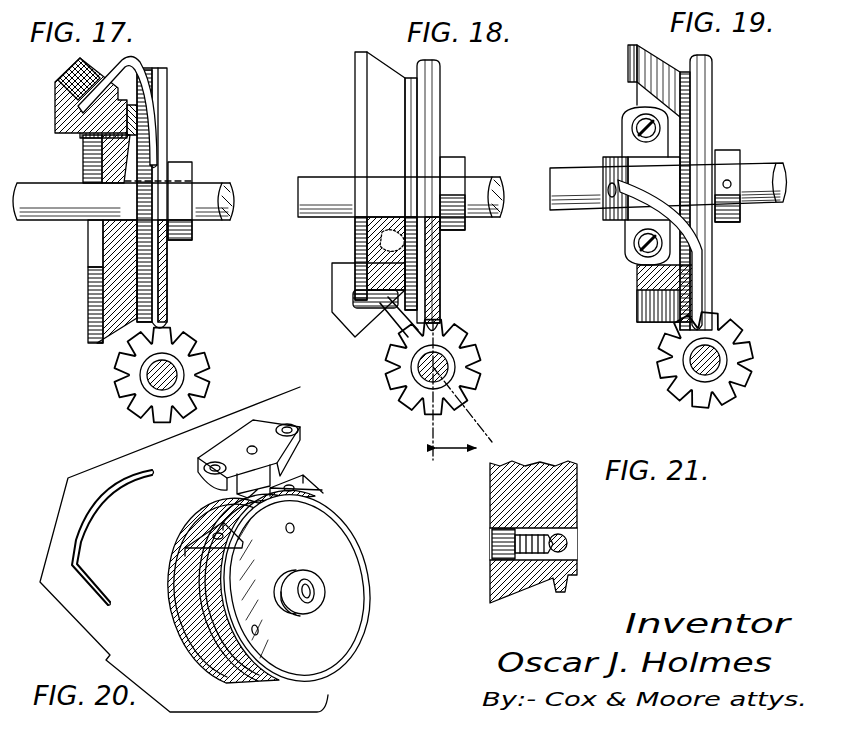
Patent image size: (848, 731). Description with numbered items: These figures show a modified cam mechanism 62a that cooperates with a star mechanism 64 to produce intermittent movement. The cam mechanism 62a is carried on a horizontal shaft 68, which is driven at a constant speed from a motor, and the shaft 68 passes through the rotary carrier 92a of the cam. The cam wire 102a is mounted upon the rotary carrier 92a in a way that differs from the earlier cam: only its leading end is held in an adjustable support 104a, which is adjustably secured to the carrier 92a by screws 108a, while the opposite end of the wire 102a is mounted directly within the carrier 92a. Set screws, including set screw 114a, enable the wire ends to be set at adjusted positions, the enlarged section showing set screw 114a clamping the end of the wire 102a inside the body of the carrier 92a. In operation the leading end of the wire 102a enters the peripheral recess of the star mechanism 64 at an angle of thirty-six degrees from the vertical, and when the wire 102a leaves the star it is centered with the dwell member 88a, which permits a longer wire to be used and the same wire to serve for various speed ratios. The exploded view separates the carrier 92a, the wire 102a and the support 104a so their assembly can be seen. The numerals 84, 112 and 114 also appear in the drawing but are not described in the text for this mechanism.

In FIG. 17, the modified cam mechanism 62a is at (172, 95).
In FIG. 18, the modified cam mechanism 62a is at (446, 80).
In FIG. 19, the modified cam mechanism 62a is at (712, 72).
In FIG. 20, the modified cam mechanism 62a is at (372, 590).
In FIG. 17, the star mechanism 64 is at (118, 405).
In FIG. 18, the star mechanism 64 is at (482, 380).
In FIG. 17, the shaft 68 is at (210, 180).
In FIG. 18, the shaft 68 is at (316, 183).
In FIG. 18, the hub of ratchet wheel 84 is at (452, 360).
In FIG. 18, the dwell member 88a is at (440, 125).
In FIG. 19, the dwell member 88a is at (700, 112).
In FIG. 17, the rotary carrier 92a is at (92, 338).
In FIG. 18, the rotary carrier 92a is at (373, 97).
In FIG. 19, the rotary carrier 92a is at (630, 48).
In FIG. 21, the rotary carrier 92a is at (515, 500).
In FIG. 17, the cam wire 102a is at (140, 58).
In FIG. 18, the cam wire 102a is at (395, 336).
In FIG. 19, the cam wire 102a is at (710, 292).
In FIG. 20, the cam wire 102a is at (78, 545).
In FIG. 21, the cam wire 102a is at (582, 543).
In FIG. 17, the adjustable support 104a is at (60, 133).
In FIG. 18, the adjustable support 104a is at (340, 310).
In FIG. 19, the adjustable support 104a is at (628, 250).
In FIG. 20, the adjustable support 104a is at (303, 432).
In FIG. 19, the screws 108a is at (634, 122).
In FIG. 17, the set screw 112 is at (62, 80).
In FIG. 19, the set screw 112 is at (610, 188).
In FIG. 18, the pin 114 is at (360, 243).
In FIG. 21, the set screw 114a is at (518, 548).